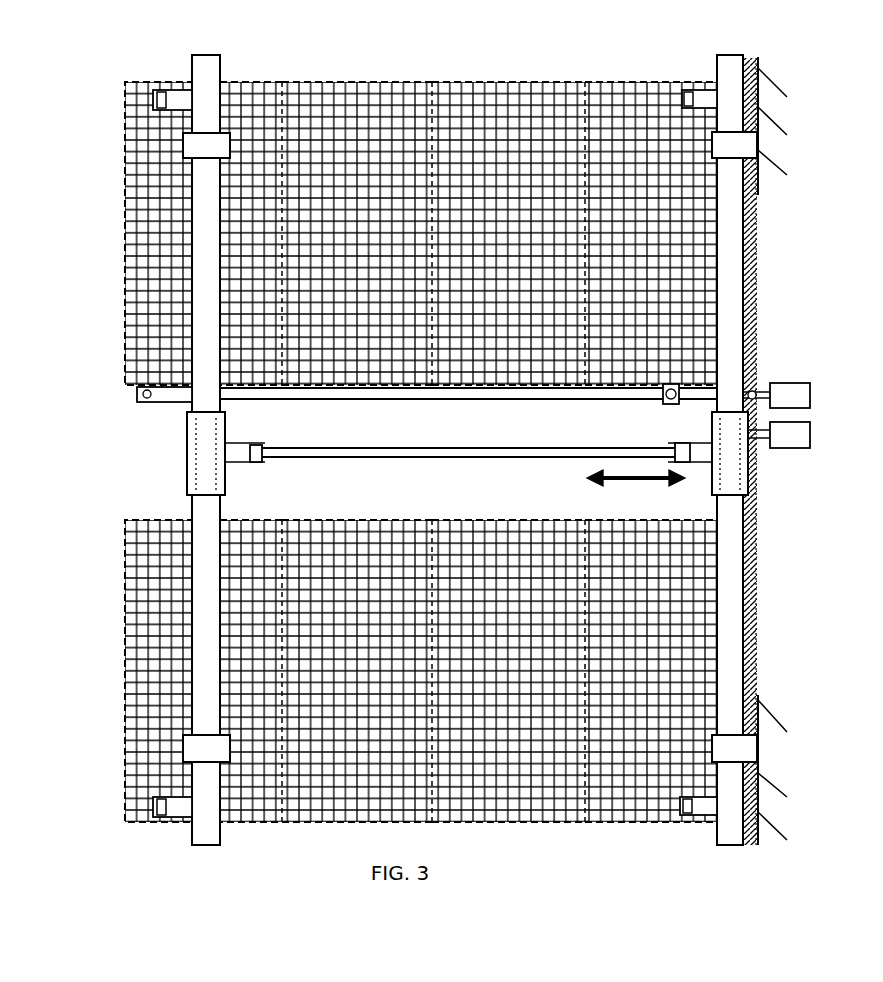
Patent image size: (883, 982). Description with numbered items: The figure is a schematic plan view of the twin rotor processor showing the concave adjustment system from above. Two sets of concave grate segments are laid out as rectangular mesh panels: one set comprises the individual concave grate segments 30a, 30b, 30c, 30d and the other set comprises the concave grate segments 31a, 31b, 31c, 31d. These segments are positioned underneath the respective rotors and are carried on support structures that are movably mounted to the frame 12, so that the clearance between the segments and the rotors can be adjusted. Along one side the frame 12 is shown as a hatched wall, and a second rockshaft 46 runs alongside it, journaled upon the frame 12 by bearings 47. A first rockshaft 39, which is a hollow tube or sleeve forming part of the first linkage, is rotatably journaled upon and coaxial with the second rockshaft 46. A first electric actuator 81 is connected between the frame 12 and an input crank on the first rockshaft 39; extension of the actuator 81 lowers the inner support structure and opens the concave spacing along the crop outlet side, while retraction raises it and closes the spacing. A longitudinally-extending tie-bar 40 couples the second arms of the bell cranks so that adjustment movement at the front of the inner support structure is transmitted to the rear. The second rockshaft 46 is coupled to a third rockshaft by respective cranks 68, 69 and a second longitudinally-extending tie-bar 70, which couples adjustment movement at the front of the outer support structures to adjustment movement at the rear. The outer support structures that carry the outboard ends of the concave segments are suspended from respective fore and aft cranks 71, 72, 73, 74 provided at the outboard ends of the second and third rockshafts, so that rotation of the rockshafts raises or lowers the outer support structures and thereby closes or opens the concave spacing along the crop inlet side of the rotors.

The frame 12 is at (780, 118).
The concave grate segment 30a is at (240, 825).
The concave grate segment 30b is at (322, 825).
The concave grate segment 30c is at (540, 825).
The concave grate segment 30d is at (645, 825).
The concave grate segment 31a is at (245, 80).
The concave grate segment 31b is at (360, 80).
The concave grate segment 31c is at (505, 80).
The concave grate segment 31d is at (665, 80).
The first rockshaft 39 is at (748, 483).
The tie-bar 40 is at (462, 459).
The second rockshaft 46 is at (745, 565).
The bearings 47 is at (750, 157).
The crank 68 is at (688, 402).
The crank 69 is at (168, 402).
The tie-bar 70 is at (470, 398).
The crank 71 is at (705, 90).
The crank 72 is at (175, 88).
The crank 73 is at (695, 818).
The crank 74 is at (175, 820).
The first electric actuator 81 is at (810, 442).